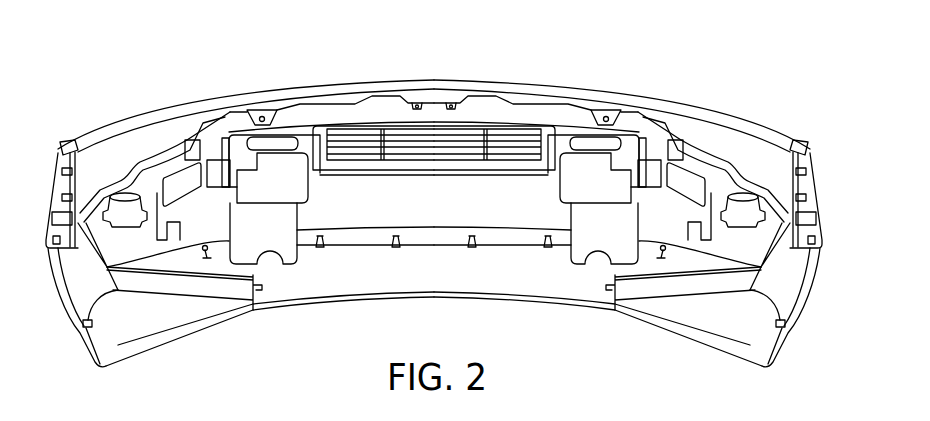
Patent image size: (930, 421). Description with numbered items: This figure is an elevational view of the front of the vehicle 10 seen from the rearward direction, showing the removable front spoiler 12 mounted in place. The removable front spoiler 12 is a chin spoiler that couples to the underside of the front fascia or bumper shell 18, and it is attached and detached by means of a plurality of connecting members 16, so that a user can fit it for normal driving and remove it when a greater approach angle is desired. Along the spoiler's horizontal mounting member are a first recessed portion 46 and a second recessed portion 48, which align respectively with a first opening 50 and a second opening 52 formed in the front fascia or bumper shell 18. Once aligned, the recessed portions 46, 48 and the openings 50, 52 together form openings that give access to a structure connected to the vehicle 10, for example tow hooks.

The vehicle 10 is at (716, 78).
The removable front spoiler 12 is at (786, 349).
The connecting members 16 is at (92, 323).
The front fascia or bumper shell 18 is at (60, 292).
The first recessed portion 46 is at (287, 262).
The second recessed portion 48 is at (581, 262).
The first opening 50 is at (297, 220).
The second opening 52 is at (632, 222).